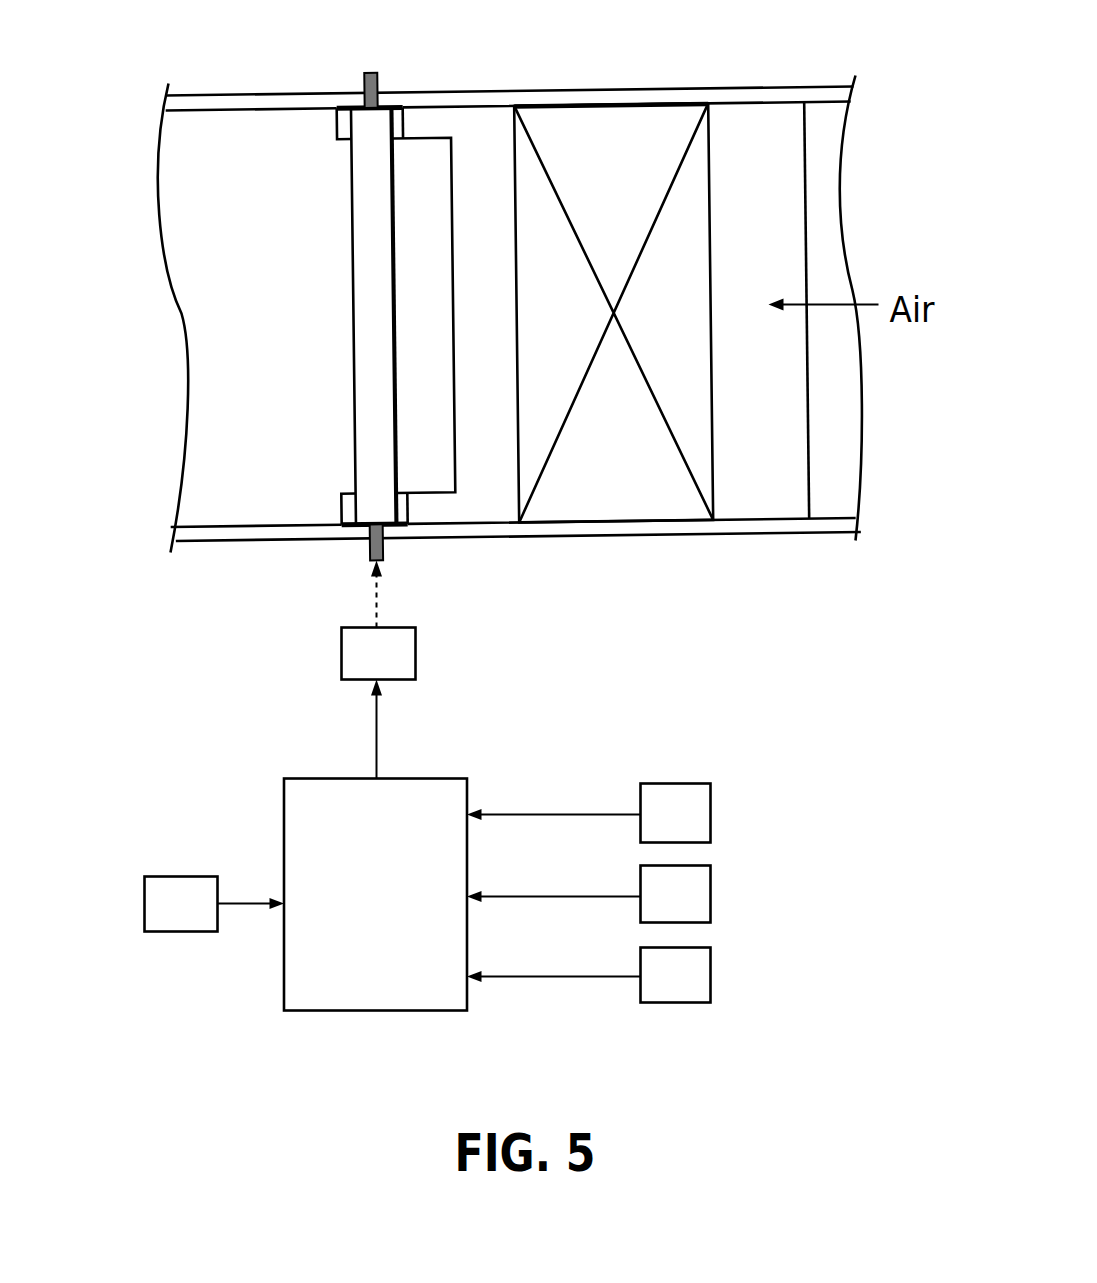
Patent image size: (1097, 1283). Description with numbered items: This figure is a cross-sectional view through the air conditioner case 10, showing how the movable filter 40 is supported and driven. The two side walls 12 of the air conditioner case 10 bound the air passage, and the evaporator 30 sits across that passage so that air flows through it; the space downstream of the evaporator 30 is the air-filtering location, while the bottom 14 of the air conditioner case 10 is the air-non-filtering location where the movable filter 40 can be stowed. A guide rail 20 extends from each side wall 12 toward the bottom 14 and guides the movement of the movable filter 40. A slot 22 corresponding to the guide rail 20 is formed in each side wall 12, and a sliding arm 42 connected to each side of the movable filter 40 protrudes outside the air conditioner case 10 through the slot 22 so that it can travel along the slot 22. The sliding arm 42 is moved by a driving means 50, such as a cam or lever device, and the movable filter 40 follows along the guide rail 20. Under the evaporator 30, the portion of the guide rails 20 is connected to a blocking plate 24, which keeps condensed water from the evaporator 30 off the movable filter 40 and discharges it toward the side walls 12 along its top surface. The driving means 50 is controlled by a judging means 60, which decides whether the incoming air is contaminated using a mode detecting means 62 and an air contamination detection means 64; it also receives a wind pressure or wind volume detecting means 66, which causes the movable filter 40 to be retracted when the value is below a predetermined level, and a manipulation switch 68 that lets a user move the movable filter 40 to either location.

The air conditioner case 10 is at (776, 84).
The side wall 12 is at (668, 92).
The bottom 14 is at (203, 312).
The guide rail 20 is at (337, 125).
The slot 22 is at (362, 101).
The blocking plate 24 is at (485, 448).
The evaporator 30 is at (612, 120).
The movable filter 40 is at (378, 336).
The sliding arm 42 is at (372, 73).
The driving means 50 is at (416, 653).
The judging means 60 is at (300, 803).
The mode detecting means 62 is at (708, 820).
The air contamination detection means 64 is at (708, 900).
The wind pressure or wind volume detecting means 66 is at (160, 910).
The manipulation switch 68 is at (708, 980).